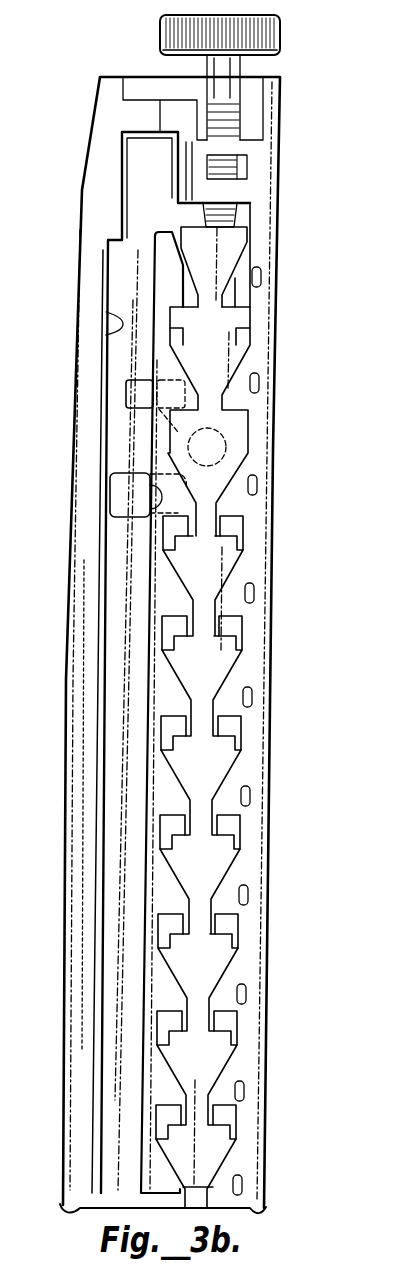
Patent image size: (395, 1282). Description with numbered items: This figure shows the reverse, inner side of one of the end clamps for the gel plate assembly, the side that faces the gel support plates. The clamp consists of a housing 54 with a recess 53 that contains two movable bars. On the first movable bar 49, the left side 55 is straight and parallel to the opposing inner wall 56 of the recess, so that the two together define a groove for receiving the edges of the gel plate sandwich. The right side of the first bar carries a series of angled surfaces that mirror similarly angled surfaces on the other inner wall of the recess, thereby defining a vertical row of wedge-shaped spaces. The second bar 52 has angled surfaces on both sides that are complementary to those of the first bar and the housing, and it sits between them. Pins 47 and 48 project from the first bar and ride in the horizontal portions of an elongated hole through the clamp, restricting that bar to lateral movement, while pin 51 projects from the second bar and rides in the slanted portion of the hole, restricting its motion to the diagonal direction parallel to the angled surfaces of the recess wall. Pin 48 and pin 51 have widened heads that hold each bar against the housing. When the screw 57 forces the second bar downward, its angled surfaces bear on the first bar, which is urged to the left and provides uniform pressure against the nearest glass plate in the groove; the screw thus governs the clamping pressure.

The pin 47 is at (140, 422).
The pin 48 is at (150, 493).
The movable bar 49 is at (168, 283).
The pin 51 is at (228, 431).
The second bar 52 is at (215, 360).
The recess 53 is at (140, 172).
The housing 54 is at (108, 100).
The left side 55 is at (140, 358).
The inner wall 56 is at (104, 316).
The screw 57 is at (281, 42).